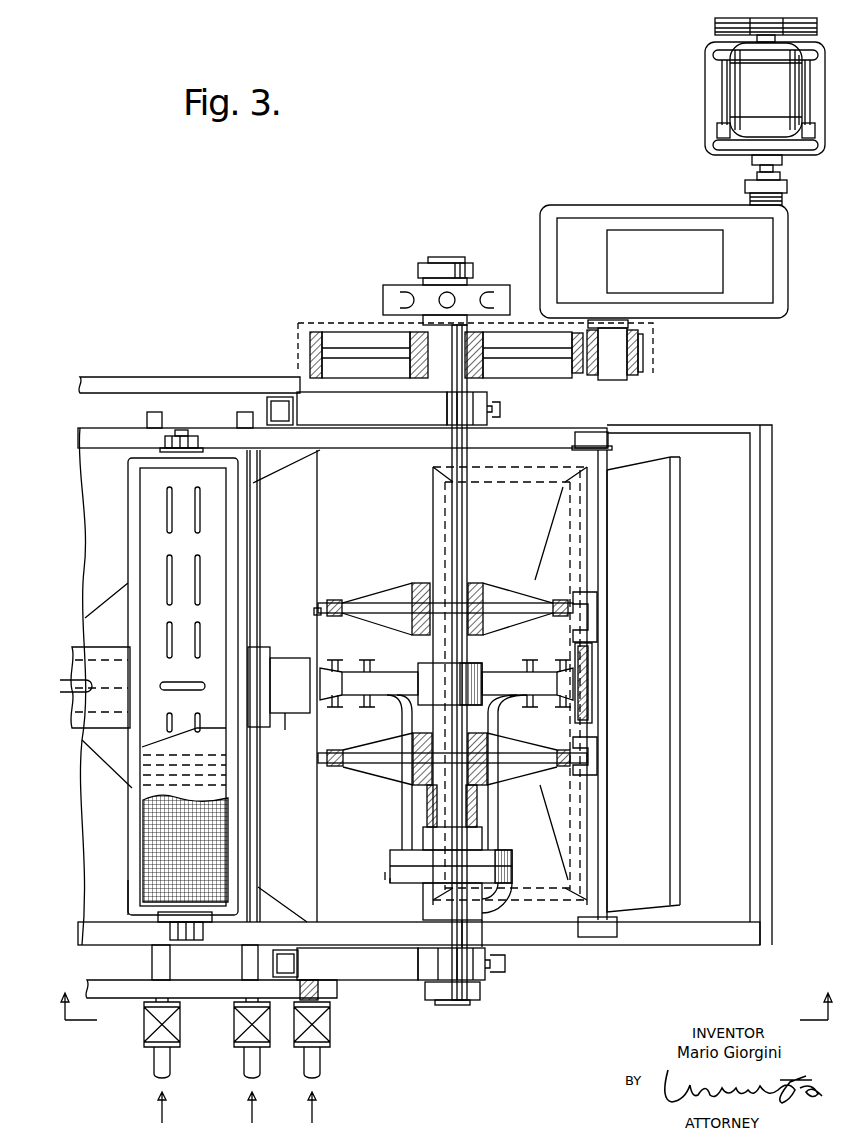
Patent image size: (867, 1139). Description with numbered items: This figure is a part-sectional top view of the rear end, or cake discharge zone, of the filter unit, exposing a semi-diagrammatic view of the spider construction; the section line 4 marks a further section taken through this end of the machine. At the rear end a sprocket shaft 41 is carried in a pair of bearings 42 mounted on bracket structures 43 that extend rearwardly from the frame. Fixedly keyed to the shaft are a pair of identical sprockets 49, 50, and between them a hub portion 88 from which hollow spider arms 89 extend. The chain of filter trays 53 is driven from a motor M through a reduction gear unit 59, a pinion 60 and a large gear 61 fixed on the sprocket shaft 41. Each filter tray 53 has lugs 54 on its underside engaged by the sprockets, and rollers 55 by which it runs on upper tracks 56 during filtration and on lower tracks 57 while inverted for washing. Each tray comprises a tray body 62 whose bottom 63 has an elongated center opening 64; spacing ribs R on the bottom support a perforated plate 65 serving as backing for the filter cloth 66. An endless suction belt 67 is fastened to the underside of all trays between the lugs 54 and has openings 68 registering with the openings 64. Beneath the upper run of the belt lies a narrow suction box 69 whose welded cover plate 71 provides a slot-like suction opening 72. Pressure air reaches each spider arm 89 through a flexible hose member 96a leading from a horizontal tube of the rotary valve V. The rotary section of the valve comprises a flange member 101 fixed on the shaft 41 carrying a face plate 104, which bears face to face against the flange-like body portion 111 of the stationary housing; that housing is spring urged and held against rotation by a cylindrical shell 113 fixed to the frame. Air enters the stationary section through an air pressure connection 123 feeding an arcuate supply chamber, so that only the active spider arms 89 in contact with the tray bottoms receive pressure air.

The motor M is at (727, 82).
The reduction gear unit 59 is at (652, 240).
The bracket structures 43 is at (320, 405).
The bearings 42 is at (487, 410).
The large gear 61 is at (568, 372).
The pinion 60 is at (630, 372).
The lower tracks 57 is at (580, 428).
The upper tracks 56 is at (125, 432).
The rollers 55 is at (196, 440).
The filter trays 53 is at (125, 492).
The tray bottom 63 is at (150, 560).
The spacing ribs R is at (174, 520).
The suction opening 72 is at (60, 680).
The center opening 64 is at (182, 686).
The perforated plate 65 is at (202, 745).
The openings 68 is at (84, 692).
The filter cloth 66 is at (155, 838).
The tray body 62 is at (132, 862).
The suction belt 67 is at (258, 648).
The cover plate 71 is at (285, 672).
The suction box 69 is at (286, 716).
The sprocket shaft 41 is at (468, 530).
The sprocket 50 is at (505, 588).
The lugs 54 is at (597, 625).
The spider arms 89 is at (390, 662).
The hub portion 88 is at (470, 672).
The hose member 96a is at (400, 812).
The sprocket 49 is at (505, 782).
The flange member 101 is at (392, 848).
The face plate 104 is at (392, 862).
The rotary valve V is at (385, 872).
The flange-like body portion 111 is at (390, 878).
The cylindrical shell 113 is at (423, 903).
The air pressure connection 123 is at (512, 896).
The section line 4 is at (444, 991).